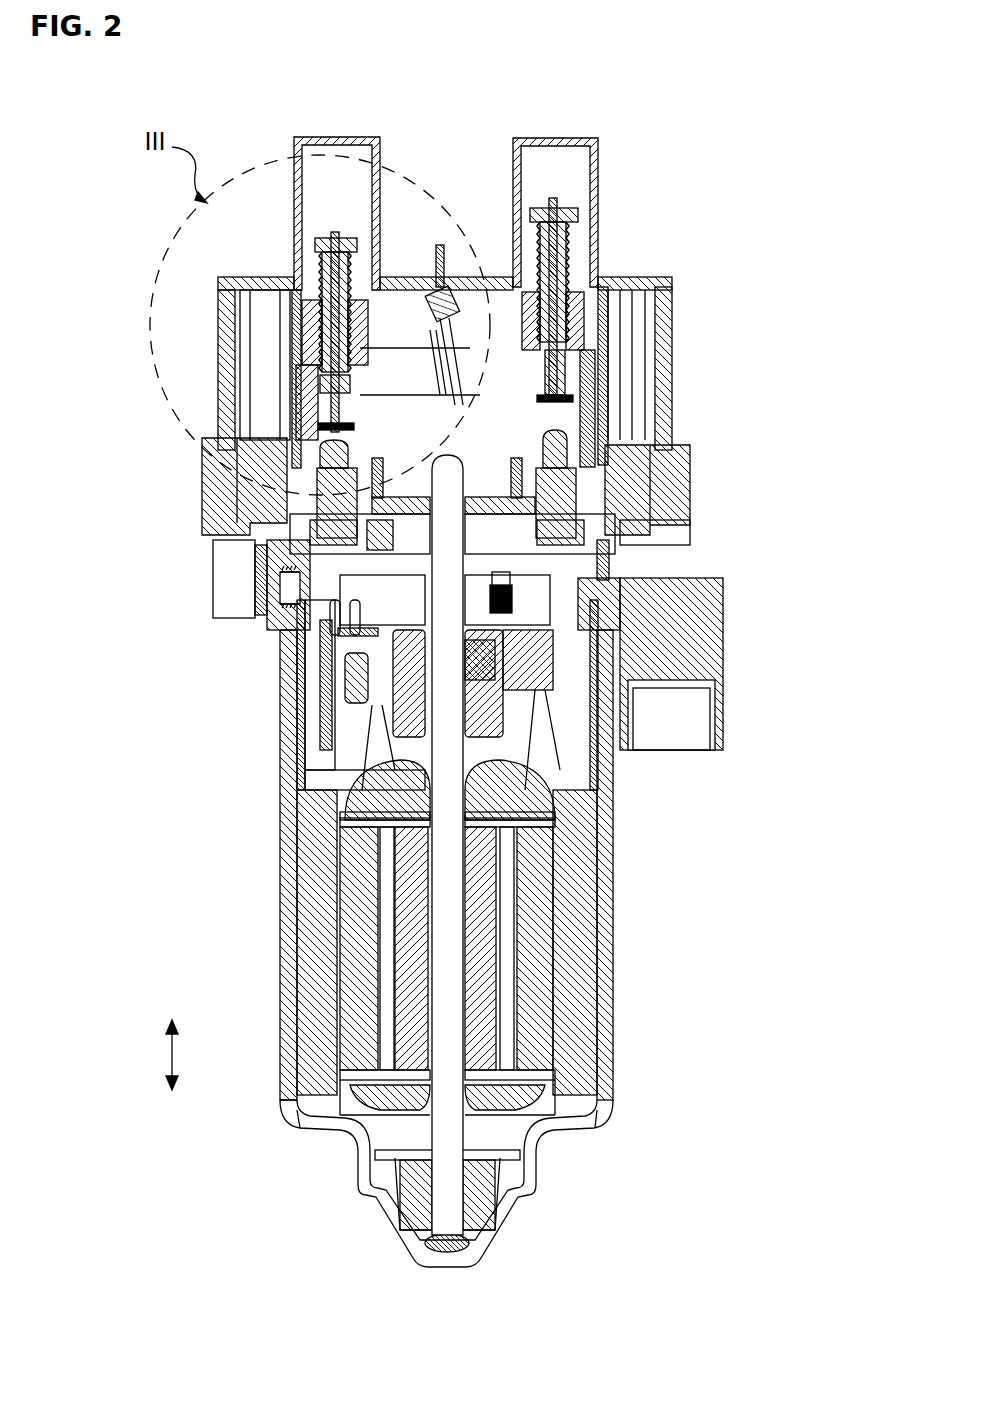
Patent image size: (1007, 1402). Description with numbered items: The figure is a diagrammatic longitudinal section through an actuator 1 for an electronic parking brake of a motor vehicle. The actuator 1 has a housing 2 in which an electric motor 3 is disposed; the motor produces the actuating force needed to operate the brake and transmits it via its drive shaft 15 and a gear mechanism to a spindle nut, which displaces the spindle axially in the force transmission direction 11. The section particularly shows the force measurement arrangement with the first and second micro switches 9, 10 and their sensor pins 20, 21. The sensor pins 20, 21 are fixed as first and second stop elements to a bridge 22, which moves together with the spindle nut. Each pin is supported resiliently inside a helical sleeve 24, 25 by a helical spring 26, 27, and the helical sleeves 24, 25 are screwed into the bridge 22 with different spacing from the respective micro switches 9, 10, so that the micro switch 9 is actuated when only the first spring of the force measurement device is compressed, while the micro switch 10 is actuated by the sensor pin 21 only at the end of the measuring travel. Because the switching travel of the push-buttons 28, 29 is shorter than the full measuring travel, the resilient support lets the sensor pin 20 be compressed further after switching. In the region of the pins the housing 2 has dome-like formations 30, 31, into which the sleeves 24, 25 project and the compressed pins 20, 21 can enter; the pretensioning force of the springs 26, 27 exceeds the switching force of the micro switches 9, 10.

The actuator 1 is at (112, 180).
The housing 2 is at (673, 312).
The electric motor 3 is at (655, 905).
The first micro switch 9 is at (330, 500).
The second micro switch 10 is at (575, 510).
The force transmission direction 11 is at (165, 1050).
The drive shaft 15 is at (440, 772).
The first sensor pin 20 is at (337, 413).
The second sensor pin 21 is at (557, 388).
The bridge 22 is at (590, 402).
The first helical sleeve 24 is at (318, 300).
The second helical sleeve 25 is at (573, 240).
The first helical spring 26 is at (330, 388).
The second helical spring 27 is at (560, 358).
The push-button 28 is at (327, 443).
The push-button 29 is at (557, 430).
The dome-like formation 30 is at (340, 137).
The dome-like formation 31 is at (556, 138).